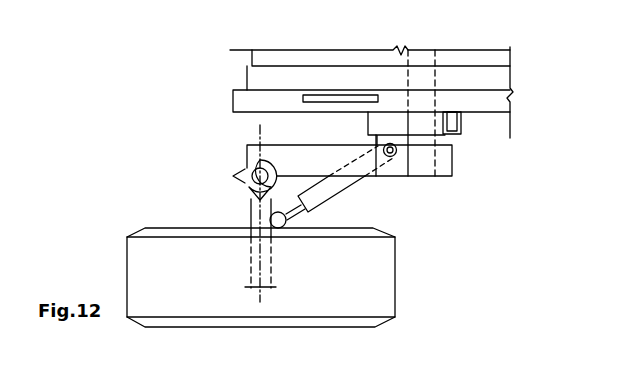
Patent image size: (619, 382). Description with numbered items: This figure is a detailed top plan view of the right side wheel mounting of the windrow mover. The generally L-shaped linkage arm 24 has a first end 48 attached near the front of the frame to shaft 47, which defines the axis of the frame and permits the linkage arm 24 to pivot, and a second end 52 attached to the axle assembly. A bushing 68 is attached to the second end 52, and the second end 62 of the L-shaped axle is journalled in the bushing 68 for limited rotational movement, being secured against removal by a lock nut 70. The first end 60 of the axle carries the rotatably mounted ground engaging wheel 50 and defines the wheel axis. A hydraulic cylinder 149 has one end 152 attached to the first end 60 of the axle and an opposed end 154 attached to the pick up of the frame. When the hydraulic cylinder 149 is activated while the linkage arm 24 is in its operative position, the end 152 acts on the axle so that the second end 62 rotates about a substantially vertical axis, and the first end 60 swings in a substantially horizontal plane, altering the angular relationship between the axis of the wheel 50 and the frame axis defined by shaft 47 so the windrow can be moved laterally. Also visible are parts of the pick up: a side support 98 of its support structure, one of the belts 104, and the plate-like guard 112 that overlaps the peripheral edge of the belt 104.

The linkage arm 24 is at (336, 157).
The second end 52 is at (280, 155).
The second end 62 is at (247, 168).
The lock nut 70 is at (238, 176).
The bushing 68 is at (238, 174).
The one end 152 is at (270, 220).
The belt 104 is at (497, 59).
The guard 112 is at (497, 75).
The side support 98 is at (490, 105).
The shaft 47 is at (415, 127).
The first end 48 is at (443, 152).
The opposed end 154 is at (393, 156).
The hydraulic cylinder 149 is at (352, 187).
The first end 60 is at (262, 270).
The ground engaging wheel 50 is at (375, 301).